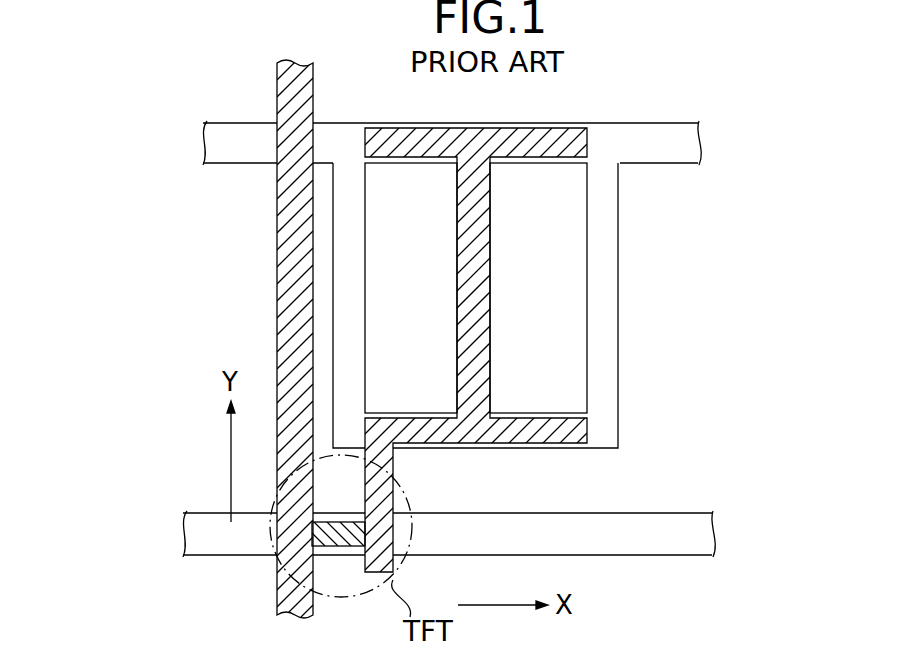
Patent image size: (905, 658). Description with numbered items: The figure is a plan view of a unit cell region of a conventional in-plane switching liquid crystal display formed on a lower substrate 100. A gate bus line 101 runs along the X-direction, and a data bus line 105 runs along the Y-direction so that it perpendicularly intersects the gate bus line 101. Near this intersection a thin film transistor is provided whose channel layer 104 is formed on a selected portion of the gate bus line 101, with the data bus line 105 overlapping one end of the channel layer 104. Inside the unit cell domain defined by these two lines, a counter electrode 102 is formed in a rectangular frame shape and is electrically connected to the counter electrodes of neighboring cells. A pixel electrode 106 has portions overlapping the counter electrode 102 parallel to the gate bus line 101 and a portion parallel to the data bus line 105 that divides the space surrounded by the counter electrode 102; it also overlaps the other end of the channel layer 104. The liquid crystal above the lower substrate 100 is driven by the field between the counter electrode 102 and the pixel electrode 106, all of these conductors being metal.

The lower substrate 100 is at (713, 413).
The gate bus line 101 is at (712, 535).
The counter electrode 102 is at (700, 146).
The channel layer 104 is at (345, 546).
The data bus line 105 is at (280, 309).
The pixel electrode 106 is at (483, 263).